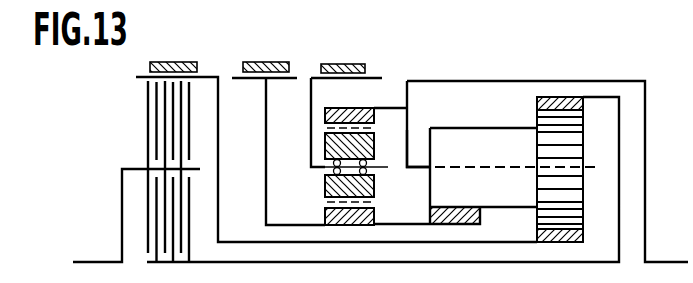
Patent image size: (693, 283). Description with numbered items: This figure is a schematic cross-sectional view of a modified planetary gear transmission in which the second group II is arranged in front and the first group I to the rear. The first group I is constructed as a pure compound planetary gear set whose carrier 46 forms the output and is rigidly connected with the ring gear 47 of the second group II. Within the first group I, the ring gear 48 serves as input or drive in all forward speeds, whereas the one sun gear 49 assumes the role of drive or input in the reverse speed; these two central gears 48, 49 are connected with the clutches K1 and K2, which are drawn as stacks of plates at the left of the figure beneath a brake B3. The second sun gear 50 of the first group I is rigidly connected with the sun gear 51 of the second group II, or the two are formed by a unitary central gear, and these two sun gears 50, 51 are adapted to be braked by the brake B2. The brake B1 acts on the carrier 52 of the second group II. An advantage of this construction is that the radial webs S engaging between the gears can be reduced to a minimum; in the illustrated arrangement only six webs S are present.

The brake B1 is at (341, 64).
The brake B2 is at (266, 62).
The brake B3 is at (181, 62).
The clutch K1 is at (172, 212).
The clutch K2 is at (163, 122).
The radial web S is at (266, 137).
The first group I is at (515, 106).
The second group II is at (301, 146).
The carrier 46 is at (418, 168).
The ring gear 47 is at (347, 108).
The ring gear 48 is at (563, 97).
The sun gear 49 is at (553, 233).
The second sun gear 50 is at (458, 224).
The sun gear 51 is at (353, 226).
The carrier 52 is at (318, 168).